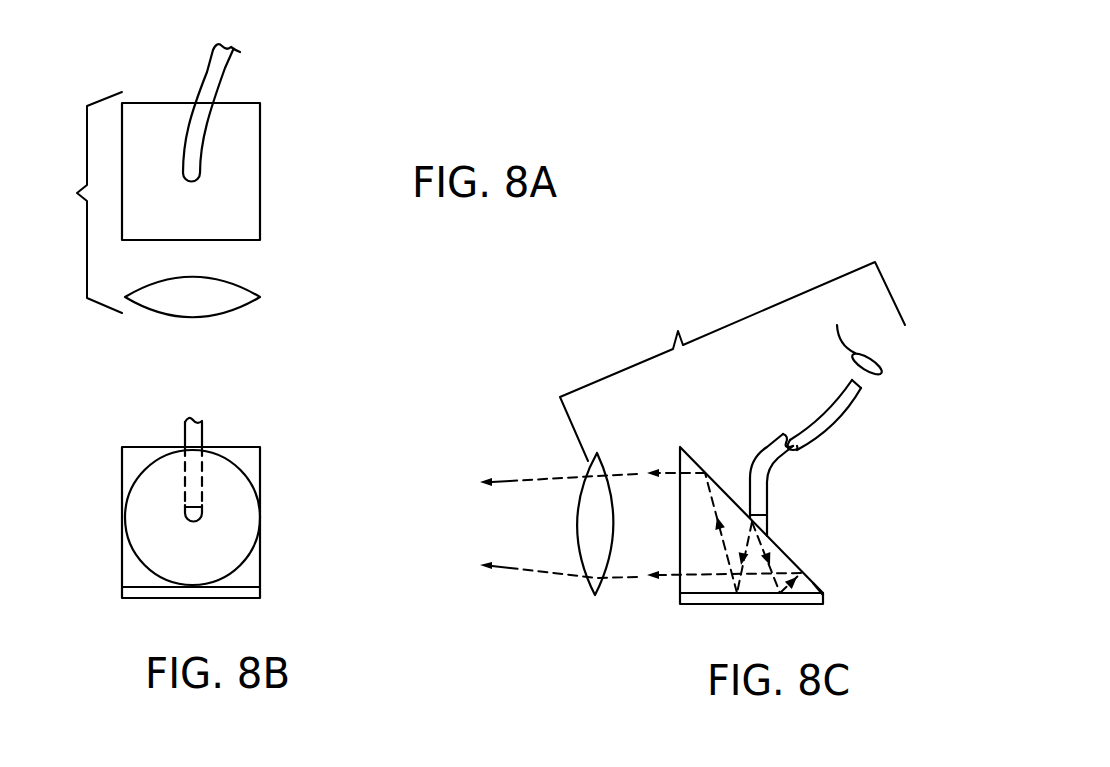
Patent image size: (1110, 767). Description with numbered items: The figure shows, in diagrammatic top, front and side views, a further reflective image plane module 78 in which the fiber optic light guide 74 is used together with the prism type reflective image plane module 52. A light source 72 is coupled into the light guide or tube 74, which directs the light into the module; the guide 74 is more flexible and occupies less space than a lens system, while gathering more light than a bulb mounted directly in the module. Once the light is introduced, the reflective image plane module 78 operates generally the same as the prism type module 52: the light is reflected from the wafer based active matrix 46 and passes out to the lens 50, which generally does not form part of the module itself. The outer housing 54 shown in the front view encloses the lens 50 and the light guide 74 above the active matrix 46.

In FIG. 8B, the wafer based active matrix 46 is at (133, 590).
In FIG. 8C, the wafer based active matrix 46 is at (817, 600).
In FIG. 8A, the lens 50 is at (250, 288).
In FIG. 8B, the lens 50 is at (250, 515).
In FIG. 8C, the lens 50 is at (588, 461).
In FIG. 8A, the prism type reflective image plane module 52 is at (250, 172).
In FIG. 8C, the prism type reflective image plane module 52 is at (807, 577).
In FIG. 8B, the housing 54 is at (240, 452).
In FIG. 8C, the light source 72 is at (895, 330).
In FIG. 8A, the fiber optic light guide 74 is at (227, 80).
In FIG. 8B, the fiber optic light guide 74 is at (183, 440).
In FIG. 8C, the fiber optic light guide 74 is at (818, 420).
In FIG. 8A, the reflective image plane module 78 is at (327, 112).
In FIG. 8B, the reflective image plane module 78 is at (307, 574).
In FIG. 8C, the reflective image plane module 78 is at (716, 425).